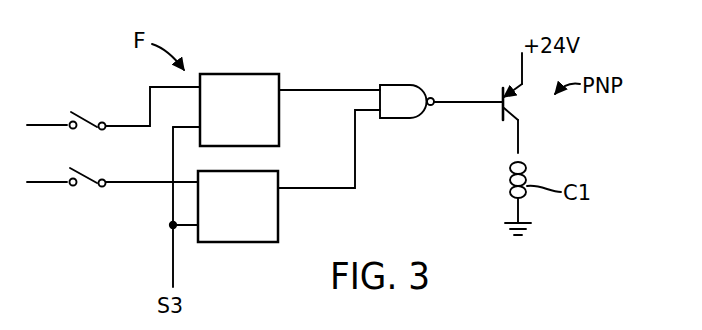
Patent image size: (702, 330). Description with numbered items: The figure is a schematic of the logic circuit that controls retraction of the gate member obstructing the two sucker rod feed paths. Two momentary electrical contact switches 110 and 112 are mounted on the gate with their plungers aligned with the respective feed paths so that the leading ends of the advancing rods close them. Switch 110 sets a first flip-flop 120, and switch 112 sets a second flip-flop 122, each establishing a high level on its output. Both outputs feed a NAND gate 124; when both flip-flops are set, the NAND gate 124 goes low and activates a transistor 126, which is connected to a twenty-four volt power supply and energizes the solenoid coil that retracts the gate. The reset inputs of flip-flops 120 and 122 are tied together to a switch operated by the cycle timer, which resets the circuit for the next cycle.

The momentary contact switch 110 is at (88, 114).
The momentary contact switch 112 is at (82, 168).
The flip-flop 120 is at (237, 85).
The flip-flop 122 is at (257, 172).
The NAND gate 124 is at (401, 120).
The transistor 126 is at (524, 108).